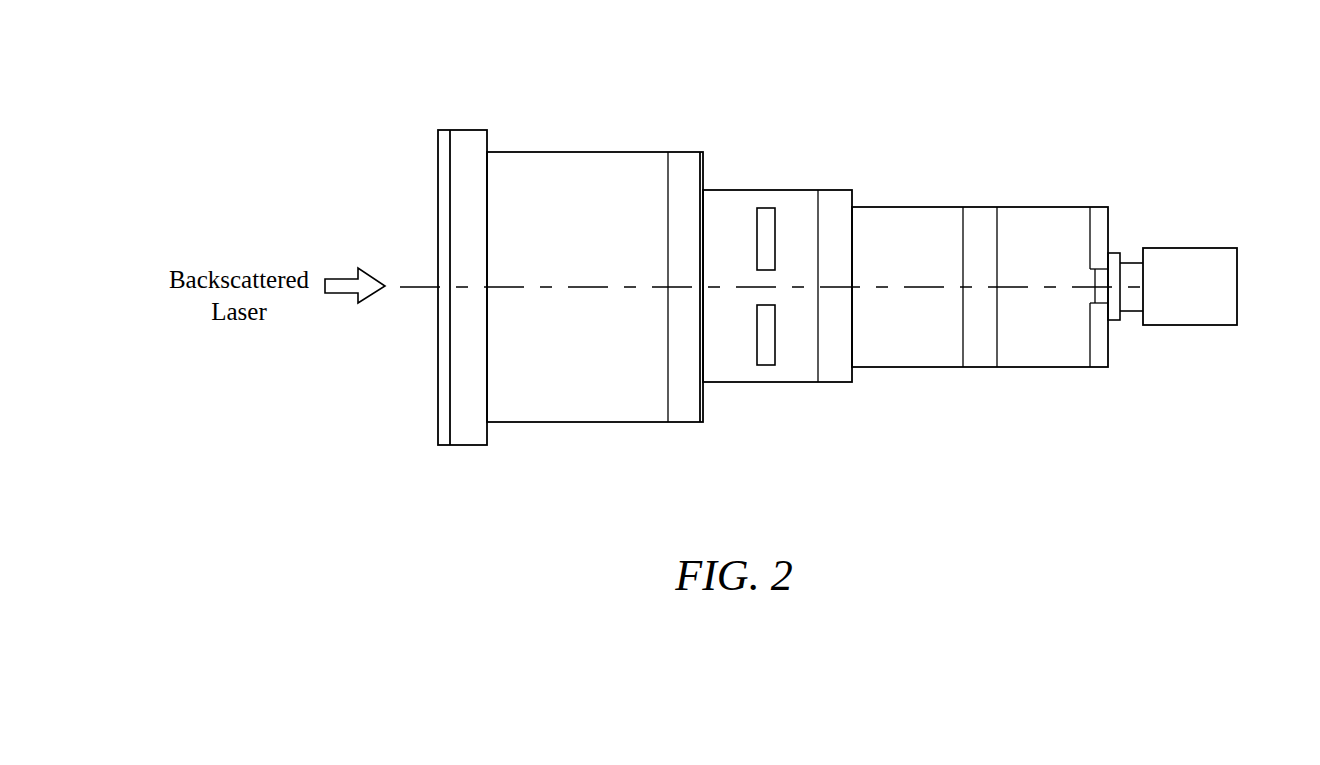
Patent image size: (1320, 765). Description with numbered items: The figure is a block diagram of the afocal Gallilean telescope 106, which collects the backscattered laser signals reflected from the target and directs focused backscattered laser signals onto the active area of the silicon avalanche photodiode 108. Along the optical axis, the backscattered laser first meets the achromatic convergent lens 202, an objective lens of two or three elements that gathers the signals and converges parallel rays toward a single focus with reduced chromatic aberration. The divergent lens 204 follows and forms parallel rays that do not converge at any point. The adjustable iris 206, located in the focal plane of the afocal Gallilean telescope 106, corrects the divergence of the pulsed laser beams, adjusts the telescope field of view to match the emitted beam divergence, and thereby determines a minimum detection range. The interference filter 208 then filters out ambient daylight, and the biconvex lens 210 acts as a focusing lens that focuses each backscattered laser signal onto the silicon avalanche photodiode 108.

The afocal Gallilean telescope 106 is at (1044, 62).
The achromatic convergent lens 202 is at (468, 140).
The divergent lens 204 is at (684, 165).
The adjustable iris 206 is at (767, 366).
The interference filter 208 is at (838, 207).
The biconvex lens 210 is at (982, 355).
The silicon avalanche photodiode 108 is at (1191, 326).